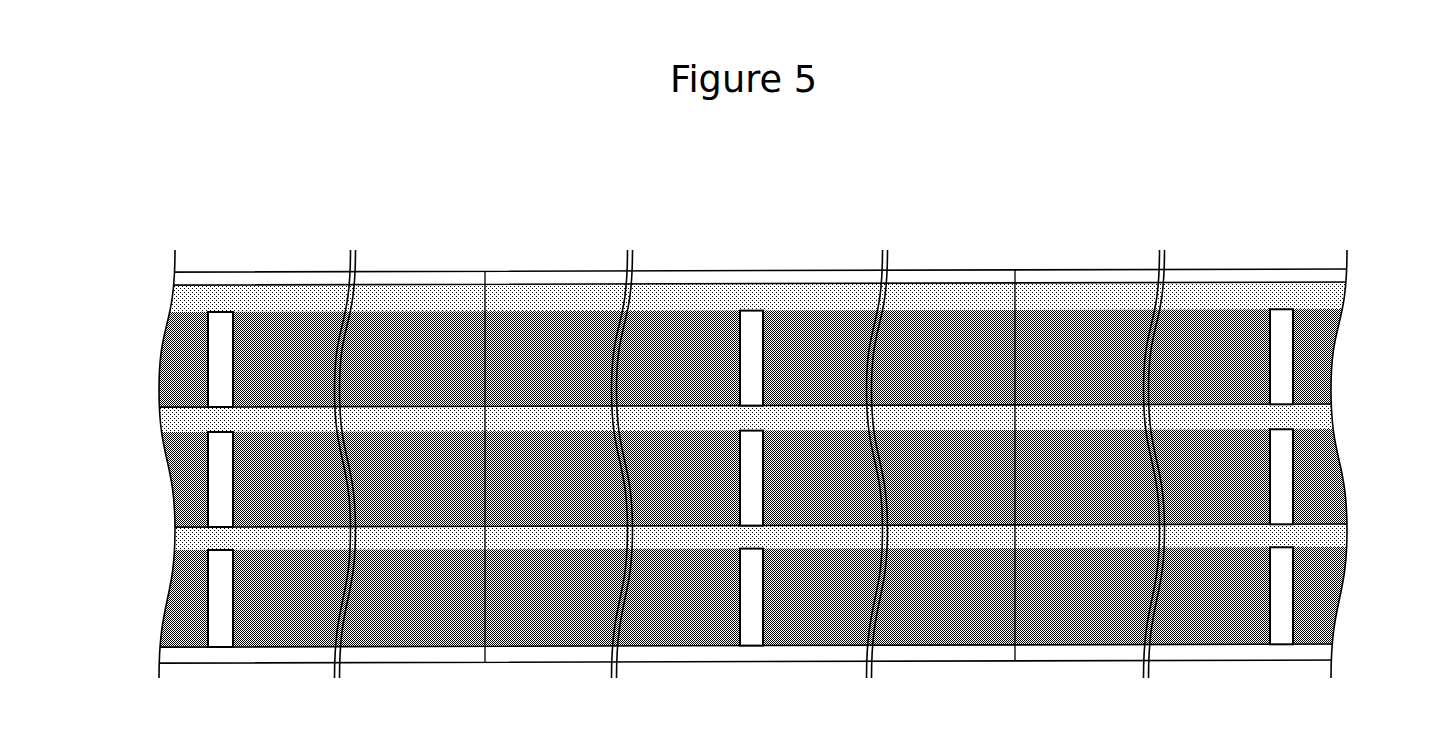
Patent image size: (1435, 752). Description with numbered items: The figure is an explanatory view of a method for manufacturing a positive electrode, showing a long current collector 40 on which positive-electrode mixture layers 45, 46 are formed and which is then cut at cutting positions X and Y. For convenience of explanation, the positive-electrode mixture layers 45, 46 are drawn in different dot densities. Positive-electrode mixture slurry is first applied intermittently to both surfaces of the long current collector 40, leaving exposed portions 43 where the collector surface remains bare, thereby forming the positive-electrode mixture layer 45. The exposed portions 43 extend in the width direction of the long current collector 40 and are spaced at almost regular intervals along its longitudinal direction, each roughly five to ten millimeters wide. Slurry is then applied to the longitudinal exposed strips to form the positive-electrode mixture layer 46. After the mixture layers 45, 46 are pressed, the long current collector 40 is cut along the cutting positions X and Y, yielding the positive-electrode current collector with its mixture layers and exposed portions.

The long current collector 40 is at (1133, 268).
The exposed portion 43 is at (222, 325).
The positive-electrode mixture layer 45 is at (1067, 325).
The positive-electrode mixture layer 46 is at (178, 300).
The cutting position X is at (1310, 283).
The cutting position Y is at (483, 290).